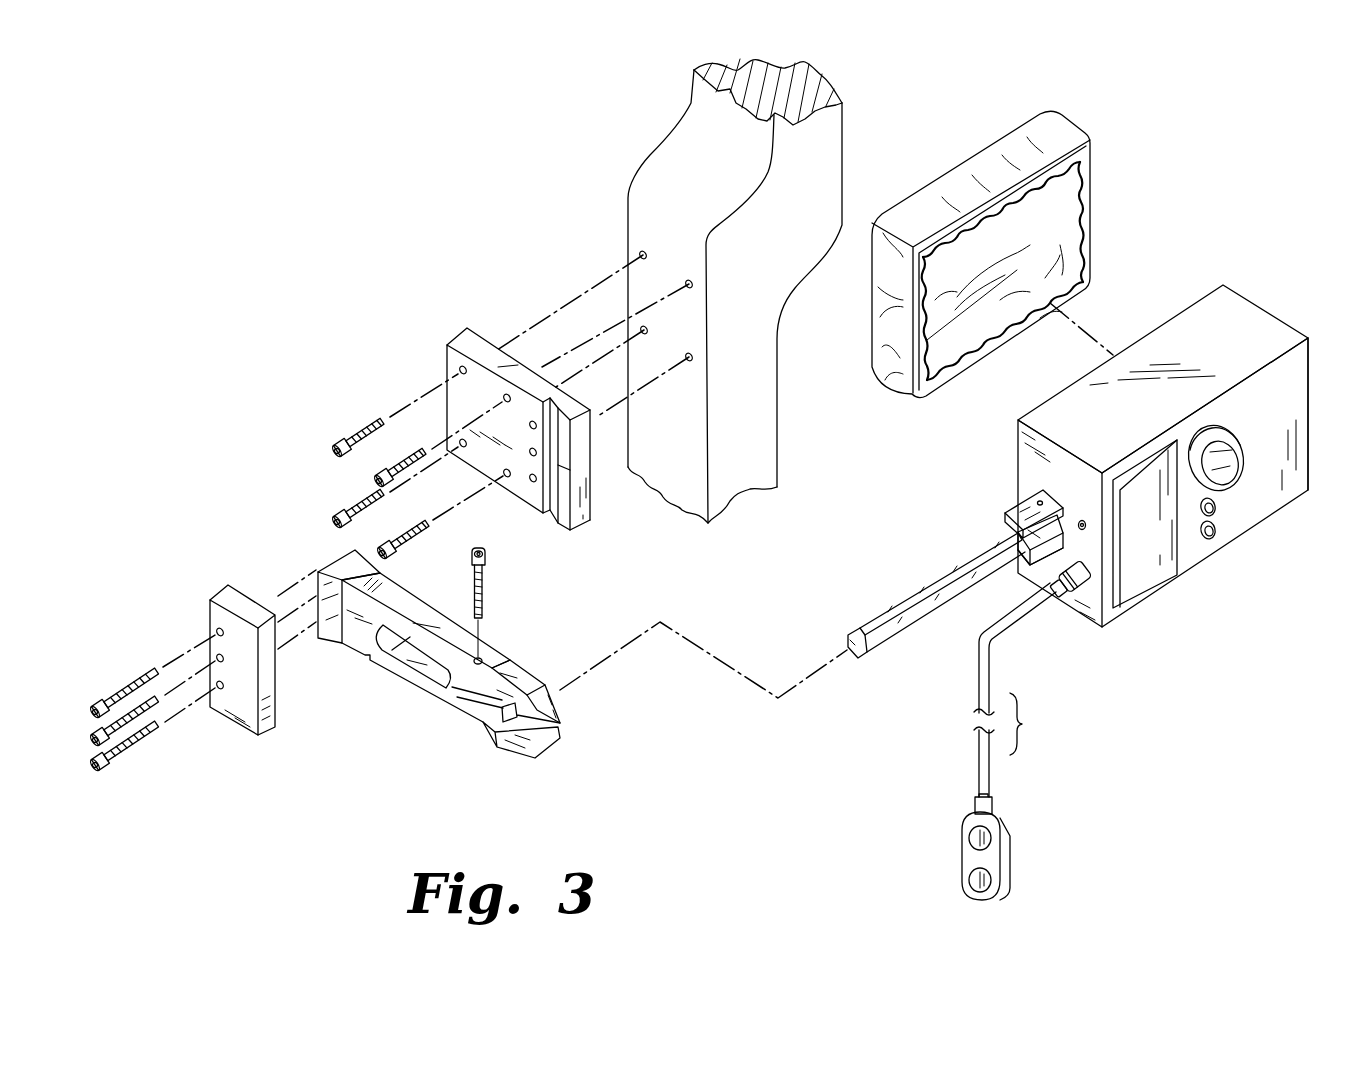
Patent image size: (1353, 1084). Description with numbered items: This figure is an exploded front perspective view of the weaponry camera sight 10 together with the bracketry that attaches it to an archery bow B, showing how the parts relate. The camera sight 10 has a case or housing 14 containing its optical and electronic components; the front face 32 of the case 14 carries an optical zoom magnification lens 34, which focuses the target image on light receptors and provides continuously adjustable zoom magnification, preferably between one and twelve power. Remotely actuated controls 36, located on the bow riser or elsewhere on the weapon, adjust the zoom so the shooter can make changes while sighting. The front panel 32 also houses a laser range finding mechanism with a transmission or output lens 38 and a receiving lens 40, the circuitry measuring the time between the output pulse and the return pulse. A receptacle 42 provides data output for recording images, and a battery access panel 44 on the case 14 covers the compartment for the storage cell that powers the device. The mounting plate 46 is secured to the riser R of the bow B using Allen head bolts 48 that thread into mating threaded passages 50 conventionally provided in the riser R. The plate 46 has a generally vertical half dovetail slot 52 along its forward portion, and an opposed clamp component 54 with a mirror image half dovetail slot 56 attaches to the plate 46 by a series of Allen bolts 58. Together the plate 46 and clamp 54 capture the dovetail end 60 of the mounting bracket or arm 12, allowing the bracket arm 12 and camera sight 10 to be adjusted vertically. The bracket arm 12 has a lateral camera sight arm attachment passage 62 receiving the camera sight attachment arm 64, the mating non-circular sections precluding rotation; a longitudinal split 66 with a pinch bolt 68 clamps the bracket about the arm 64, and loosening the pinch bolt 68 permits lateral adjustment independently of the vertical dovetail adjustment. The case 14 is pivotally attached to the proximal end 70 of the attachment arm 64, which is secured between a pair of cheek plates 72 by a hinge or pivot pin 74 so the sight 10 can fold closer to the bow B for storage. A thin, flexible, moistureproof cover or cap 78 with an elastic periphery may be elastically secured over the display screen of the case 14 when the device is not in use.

The camera sight apparatus 10 is at (1231, 108).
The mounting bracket or arm 12 is at (429, 679).
The case or housing 14 is at (1200, 297).
The front face 32 is at (1300, 360).
The optical zoom magnification lens 34 is at (1213, 427).
The remotely actuated controls 36 is at (1015, 856).
The transmission or output lens 38 is at (1217, 508).
The receiving lens 40 is at (1215, 537).
The receptacle 42 is at (1082, 520).
The battery access panel 44 is at (1133, 588).
The mounting plate 46 is at (463, 334).
The Allen head bolts 48 is at (376, 477).
The threaded passages 50 is at (644, 330).
The half dovetail slot 52 is at (553, 520).
The clamp component 54 is at (245, 733).
The mirror image half dovetail slot 56 is at (270, 606).
The Allen bolts 58 is at (152, 735).
The dovetail end 60 is at (327, 646).
The lateral camera sight arm attachment passage 62 is at (497, 750).
The camera sight attachment arm 64 is at (905, 593).
The longitudinal split 66 is at (447, 703).
The pinch bolt 68 is at (484, 571).
The proximal end 70 is at (1013, 545).
The cheek plates 72 is at (1014, 533).
The hinge or pivot pin 74 is at (1038, 502).
The cover or cap 78 is at (1030, 118).
The bow B is at (694, 71).
The riser R is at (733, 277).